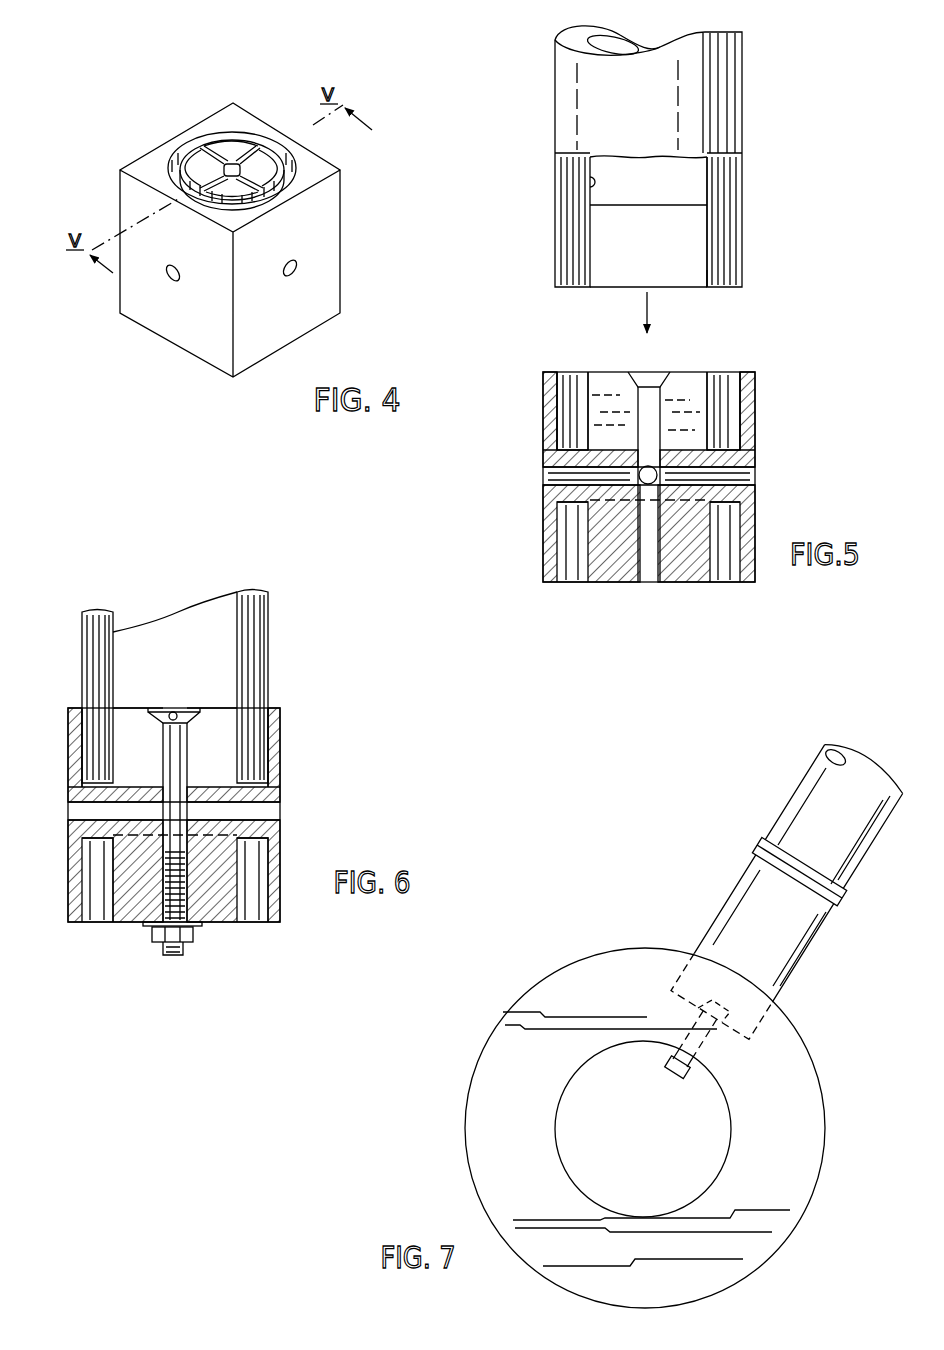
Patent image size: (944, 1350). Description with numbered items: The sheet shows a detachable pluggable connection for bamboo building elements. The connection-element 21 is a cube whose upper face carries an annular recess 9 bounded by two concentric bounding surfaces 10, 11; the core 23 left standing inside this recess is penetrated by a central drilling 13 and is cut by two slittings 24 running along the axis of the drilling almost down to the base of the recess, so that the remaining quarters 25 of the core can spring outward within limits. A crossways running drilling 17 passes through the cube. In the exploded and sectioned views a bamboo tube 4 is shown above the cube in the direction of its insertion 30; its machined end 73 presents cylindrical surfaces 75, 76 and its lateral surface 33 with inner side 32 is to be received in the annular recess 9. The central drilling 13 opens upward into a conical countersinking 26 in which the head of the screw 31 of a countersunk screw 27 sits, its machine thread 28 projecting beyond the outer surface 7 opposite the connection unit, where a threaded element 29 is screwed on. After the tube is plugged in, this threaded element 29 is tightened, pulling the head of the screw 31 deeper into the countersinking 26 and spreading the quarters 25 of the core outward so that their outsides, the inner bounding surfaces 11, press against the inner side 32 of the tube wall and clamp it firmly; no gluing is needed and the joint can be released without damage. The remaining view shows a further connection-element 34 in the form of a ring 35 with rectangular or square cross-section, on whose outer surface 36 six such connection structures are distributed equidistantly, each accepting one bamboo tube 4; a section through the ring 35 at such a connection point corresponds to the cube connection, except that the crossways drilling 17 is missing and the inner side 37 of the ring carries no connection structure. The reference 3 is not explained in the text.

In FIG. 4, the receiving opening 3 is at (193, 148).
In FIG. 5, the bamboo tube 4 is at (723, 80).
In FIG. 6, the bamboo tube 4 is at (83, 638).
In FIG. 7, the bamboo tube 4 is at (800, 795).
In FIG. 6, the outer surface 7 is at (130, 923).
In FIG. 4, the annular recess 9 is at (217, 138).
In FIG. 5, the annular recess 9 is at (578, 378).
In FIG. 4, the bounding surface 10 is at (272, 145).
In FIG. 4, the bounding surface 11 is at (167, 160).
In FIG. 5, the central drilling 13 is at (647, 583).
In FIG. 4, the crossways running drilling 17 is at (172, 282).
In FIG. 5, the crossways running drilling 17 is at (553, 478).
In FIG. 6, the crossways running drilling 17 is at (268, 812).
In FIG. 4, the connection-element 21 is at (335, 222).
In FIG. 5, the connection-element 21 is at (750, 412).
In FIG. 6, the connection-element 21 is at (273, 750).
In FIG. 4, the core 23 is at (237, 148).
In FIG. 4, the slittings 24 is at (215, 193).
In FIG. 5, the slittings 24 is at (687, 388).
In FIG. 6, the slittings 24 is at (125, 772).
In FIG. 4, the quarters of the core 25 is at (233, 188).
In FIG. 5, the conical countersinking 26 is at (635, 372).
In FIG. 6, the countersunk screw 27 is at (168, 750).
In FIG. 6, the machine thread 28 is at (180, 957).
In FIG. 6, the threaded element 29 is at (193, 933).
In FIG. 5, the insertion 30 is at (647, 302).
In FIG. 6, the head of the screw 31 is at (188, 712).
In FIG. 5, the inner side 32 is at (590, 192).
In FIG. 6, the inner side 32 is at (117, 633).
In FIG. 5, the lateral surface 33 is at (730, 200).
In FIG. 6, the lateral surface 33 is at (273, 618).
In FIG. 7, the connection-element 34 is at (622, 948).
In FIG. 7, the ring 35 is at (490, 1060).
In FIG. 7, the outer surface 36 is at (520, 995).
In FIG. 7, the inner side 37 is at (563, 1098).
In FIG. 5, the ends 73 is at (740, 243).
In FIG. 5, the surface 75 is at (707, 275).
In FIG. 5, the surface 76 is at (742, 272).